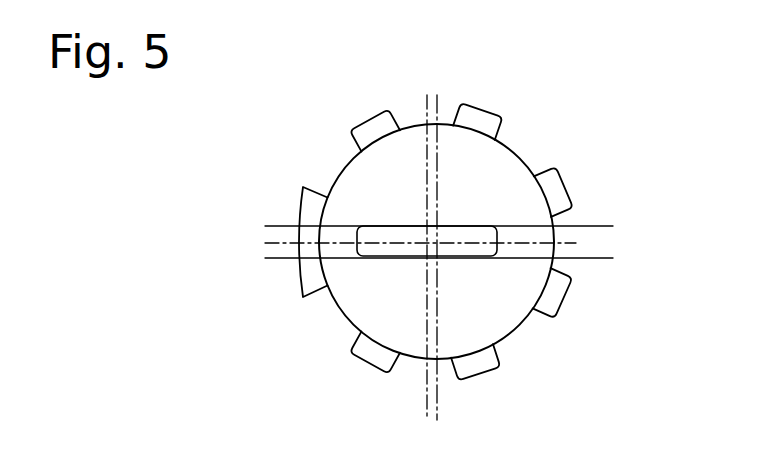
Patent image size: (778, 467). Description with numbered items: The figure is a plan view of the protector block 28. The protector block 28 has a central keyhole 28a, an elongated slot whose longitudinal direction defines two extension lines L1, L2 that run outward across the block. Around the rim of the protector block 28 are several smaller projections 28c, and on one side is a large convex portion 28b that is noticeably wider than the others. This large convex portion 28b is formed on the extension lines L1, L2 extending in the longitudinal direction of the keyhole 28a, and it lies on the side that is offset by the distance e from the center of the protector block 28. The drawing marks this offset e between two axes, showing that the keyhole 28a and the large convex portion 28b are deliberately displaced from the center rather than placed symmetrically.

The protector block 28 is at (336, 181).
The keyhole 28a is at (496, 236).
The large convex portion 28b is at (300, 208).
The projections 28c is at (470, 105).
The extension line L1 is at (594, 228).
The extension line L2 is at (594, 260).
The offset e is at (466, 409).